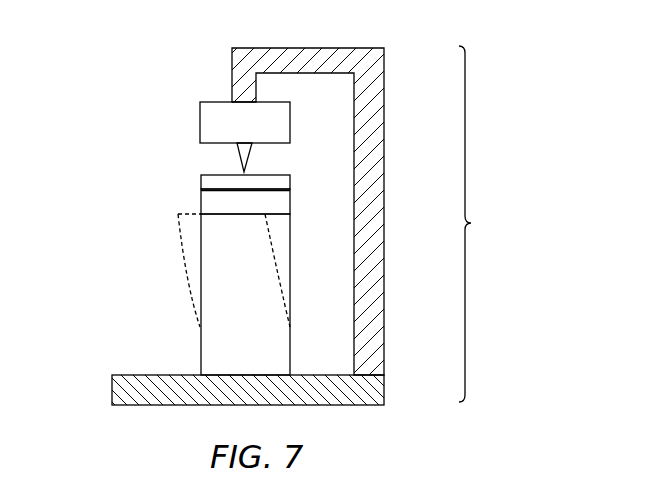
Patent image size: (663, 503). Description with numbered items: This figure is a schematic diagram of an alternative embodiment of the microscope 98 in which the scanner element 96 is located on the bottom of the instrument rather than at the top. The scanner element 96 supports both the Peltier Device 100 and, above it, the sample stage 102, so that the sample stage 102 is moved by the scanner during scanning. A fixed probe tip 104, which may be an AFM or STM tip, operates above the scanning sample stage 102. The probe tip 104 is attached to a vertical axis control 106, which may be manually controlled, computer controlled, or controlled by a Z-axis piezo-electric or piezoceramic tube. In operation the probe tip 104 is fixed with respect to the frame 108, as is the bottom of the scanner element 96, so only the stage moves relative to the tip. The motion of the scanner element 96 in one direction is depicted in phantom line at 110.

The scanner element 96 is at (213, 333).
The microscope 98 is at (479, 224).
The Peltier Device 100 is at (205, 202).
The sample stage 102 is at (202, 182).
The probe tip 104 is at (252, 152).
The vertical axis control 106 is at (205, 119).
The frame 108 is at (377, 207).
The motion of scanner in phantom line 110 is at (180, 228).